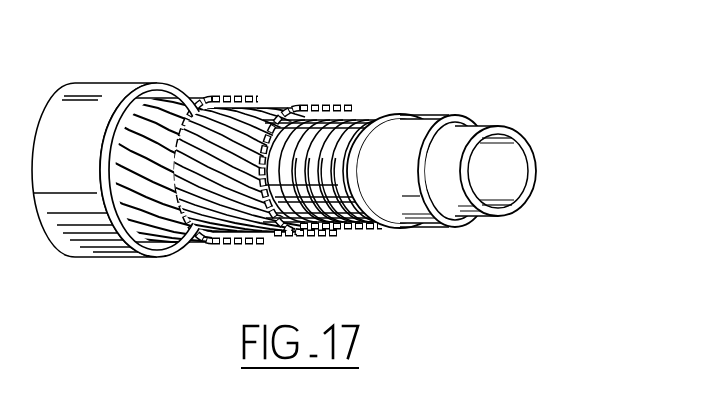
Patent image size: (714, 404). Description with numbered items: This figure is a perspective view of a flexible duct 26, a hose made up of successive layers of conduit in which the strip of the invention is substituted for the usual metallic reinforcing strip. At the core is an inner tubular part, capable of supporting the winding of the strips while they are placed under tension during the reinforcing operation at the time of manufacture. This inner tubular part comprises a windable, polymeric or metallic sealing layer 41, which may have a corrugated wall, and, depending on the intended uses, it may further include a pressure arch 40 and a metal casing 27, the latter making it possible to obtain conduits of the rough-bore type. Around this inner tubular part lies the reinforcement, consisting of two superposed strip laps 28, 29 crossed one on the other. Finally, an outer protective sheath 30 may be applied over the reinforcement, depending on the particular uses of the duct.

The flexible duct 26 is at (386, 254).
The metal casing 27 is at (513, 128).
The strip lap 28 is at (290, 100).
The strip lap 29 is at (214, 90).
The outer protective sheath 30 is at (92, 105).
The pressure arch 40 is at (363, 115).
The sealing layer 41 is at (438, 118).